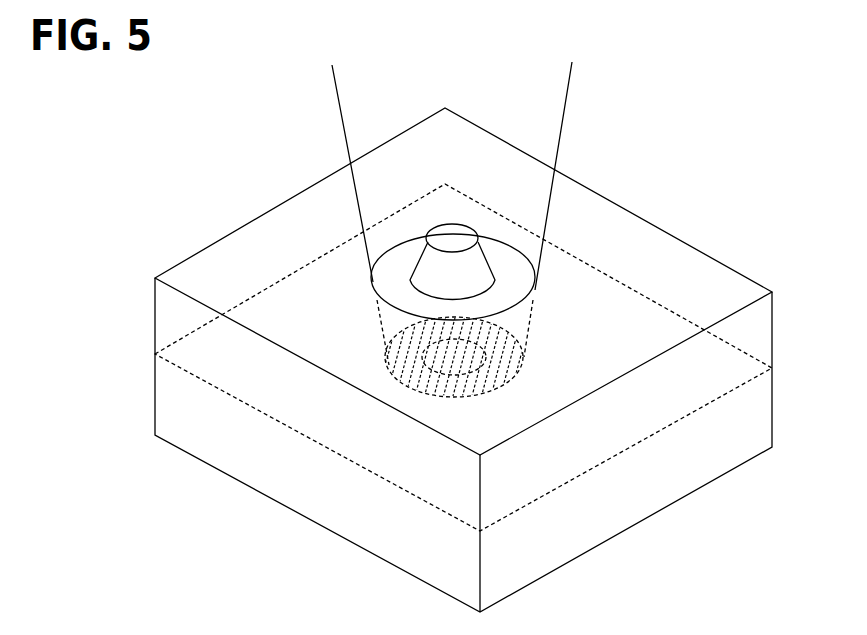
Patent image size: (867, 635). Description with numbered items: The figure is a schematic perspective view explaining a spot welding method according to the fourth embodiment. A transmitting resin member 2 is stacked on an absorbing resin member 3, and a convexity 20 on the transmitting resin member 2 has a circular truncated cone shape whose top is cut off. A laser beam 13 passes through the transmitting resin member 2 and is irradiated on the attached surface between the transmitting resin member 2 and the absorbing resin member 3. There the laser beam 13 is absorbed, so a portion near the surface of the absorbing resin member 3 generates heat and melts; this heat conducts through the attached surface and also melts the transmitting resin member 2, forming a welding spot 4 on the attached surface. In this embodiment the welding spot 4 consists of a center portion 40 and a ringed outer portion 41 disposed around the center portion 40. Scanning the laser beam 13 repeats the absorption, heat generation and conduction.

The transmitting resin member 2 is at (192, 282).
The absorbing resin member 3 is at (197, 428).
The welding spot 4 is at (408, 400).
The laser beam 13 is at (343, 146).
The convexity 20 is at (453, 238).
The center portion 40 is at (463, 336).
The outer portion 41 is at (400, 348).